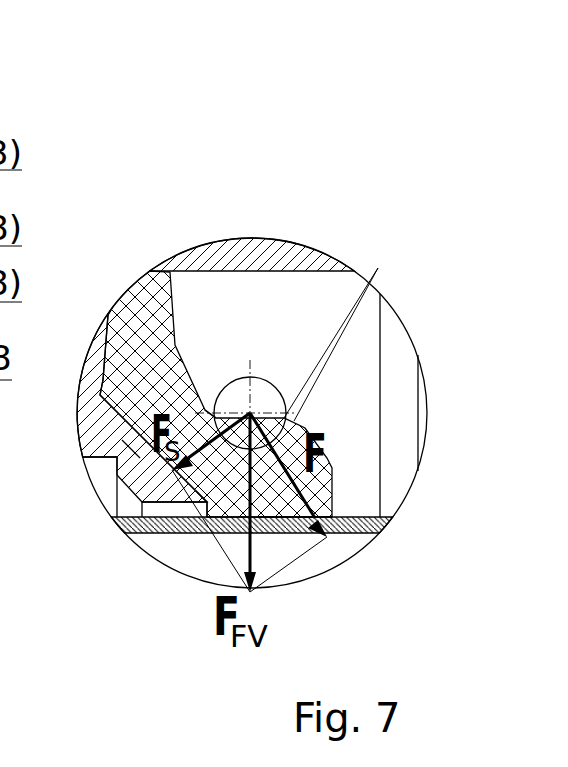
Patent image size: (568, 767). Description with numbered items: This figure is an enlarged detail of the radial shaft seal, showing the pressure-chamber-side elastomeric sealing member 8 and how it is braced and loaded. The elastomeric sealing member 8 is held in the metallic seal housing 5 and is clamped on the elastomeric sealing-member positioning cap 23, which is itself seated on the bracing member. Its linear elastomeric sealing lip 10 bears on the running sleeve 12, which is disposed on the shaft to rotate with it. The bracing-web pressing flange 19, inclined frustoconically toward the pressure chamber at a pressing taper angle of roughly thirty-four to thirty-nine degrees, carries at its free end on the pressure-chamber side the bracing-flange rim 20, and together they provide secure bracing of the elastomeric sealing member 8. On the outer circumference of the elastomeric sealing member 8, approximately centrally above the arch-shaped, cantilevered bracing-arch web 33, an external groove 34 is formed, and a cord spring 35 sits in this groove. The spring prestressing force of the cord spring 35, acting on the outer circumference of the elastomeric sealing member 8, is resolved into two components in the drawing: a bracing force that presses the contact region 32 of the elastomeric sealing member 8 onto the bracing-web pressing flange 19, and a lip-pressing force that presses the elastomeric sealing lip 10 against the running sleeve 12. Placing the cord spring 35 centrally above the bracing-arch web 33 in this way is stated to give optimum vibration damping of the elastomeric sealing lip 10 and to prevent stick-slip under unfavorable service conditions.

The seal housing 5 is at (248, 258).
The elastomeric sealing member 8 is at (165, 275).
The elastomeric sealing lip 10 is at (305, 515).
The running sleeve 12 is at (126, 535).
The bracing-web pressing flange 19 is at (132, 462).
The bracing-flange rim 20 is at (212, 488).
The elastomeric sealing-member positioning cap 23 is at (103, 317).
The contact region 32 is at (198, 412).
The bracing-arch web 33 is at (275, 515).
The external groove 34 is at (422, 268).
The cord spring 35 is at (263, 400).